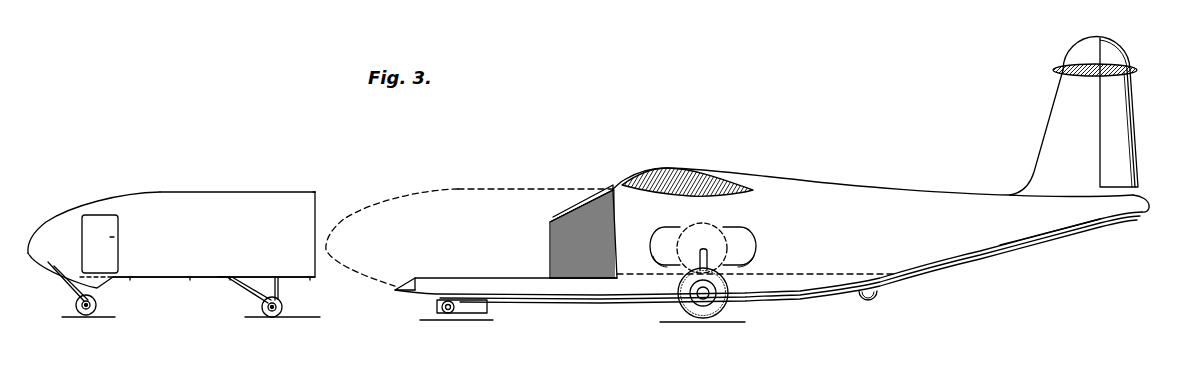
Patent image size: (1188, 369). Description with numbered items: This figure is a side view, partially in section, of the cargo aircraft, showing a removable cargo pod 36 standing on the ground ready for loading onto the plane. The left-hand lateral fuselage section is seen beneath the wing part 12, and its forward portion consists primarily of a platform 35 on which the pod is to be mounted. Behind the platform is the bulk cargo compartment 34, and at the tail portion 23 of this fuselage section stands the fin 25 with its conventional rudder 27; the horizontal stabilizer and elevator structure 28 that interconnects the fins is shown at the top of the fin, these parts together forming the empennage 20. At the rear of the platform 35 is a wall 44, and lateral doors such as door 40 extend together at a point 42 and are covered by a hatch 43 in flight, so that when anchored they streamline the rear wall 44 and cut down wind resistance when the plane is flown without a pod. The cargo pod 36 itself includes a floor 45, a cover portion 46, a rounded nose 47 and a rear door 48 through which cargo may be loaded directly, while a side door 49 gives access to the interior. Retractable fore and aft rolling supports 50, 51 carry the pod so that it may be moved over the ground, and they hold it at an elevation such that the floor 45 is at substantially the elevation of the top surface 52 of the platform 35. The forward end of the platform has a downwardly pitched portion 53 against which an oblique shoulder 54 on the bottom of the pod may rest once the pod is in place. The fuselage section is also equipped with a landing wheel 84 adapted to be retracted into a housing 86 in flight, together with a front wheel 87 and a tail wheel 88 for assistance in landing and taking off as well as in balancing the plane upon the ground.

The wing part 12 is at (668, 168).
The tail structure or empennage 20 is at (1139, 72).
The tail portion 23 is at (1092, 226).
The tail structure or fin 25 is at (1052, 108).
The rudder 27 is at (1128, 112).
The horizontal stabilizer and elevator structure 28 is at (1110, 76).
The bulk cargo compartment 34 is at (803, 180).
The platform 35 is at (528, 298).
The removable cargo pod 36 is at (203, 190).
The lateral door 40 is at (562, 225).
The meeting point of lateral doors 42 is at (552, 235).
The hatch 43 is at (587, 203).
The rear wall of platform 44 is at (608, 273).
The floor 45 is at (173, 279).
The cover portion 46 is at (268, 195).
The rounded nose 47 is at (38, 230).
The rear door 48 is at (318, 212).
The door 49 is at (115, 237).
The fore rolling support 50 is at (83, 317).
The aft rolling support 51 is at (285, 308).
The top surface of platform 52 is at (438, 278).
The downwardly pitched portion 53 is at (405, 287).
The oblique shoulder 54 is at (105, 285).
The landing wheel 84 is at (719, 318).
The housing 86 is at (748, 247).
The front wheel 87 is at (450, 315).
The tail wheel 88 is at (877, 295).